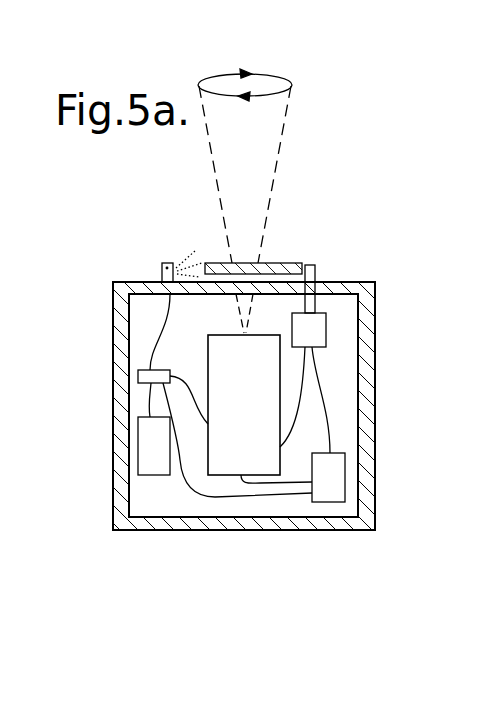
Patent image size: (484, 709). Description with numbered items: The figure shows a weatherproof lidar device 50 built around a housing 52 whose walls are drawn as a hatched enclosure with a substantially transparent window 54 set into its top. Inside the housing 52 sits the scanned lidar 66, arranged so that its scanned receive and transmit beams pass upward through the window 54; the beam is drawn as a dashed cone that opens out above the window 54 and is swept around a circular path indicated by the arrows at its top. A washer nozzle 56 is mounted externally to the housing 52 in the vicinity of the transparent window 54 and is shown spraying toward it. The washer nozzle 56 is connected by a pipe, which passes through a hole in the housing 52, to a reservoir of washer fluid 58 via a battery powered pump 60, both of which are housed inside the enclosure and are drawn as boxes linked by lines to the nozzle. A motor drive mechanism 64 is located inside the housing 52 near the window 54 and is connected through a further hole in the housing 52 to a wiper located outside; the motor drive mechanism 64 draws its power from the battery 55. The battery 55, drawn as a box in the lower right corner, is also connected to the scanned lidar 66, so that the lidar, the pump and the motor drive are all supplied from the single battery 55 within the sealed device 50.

The weatherproof lidar device 50 is at (120, 562).
The housing 52 is at (355, 283).
The transparent window 54 is at (215, 290).
The battery 55 is at (335, 470).
The washer nozzle 56 is at (156, 263).
The reservoir of washer fluid 58 is at (150, 447).
The battery powered pump 60 is at (288, 268).
The motor drive mechanism 64 is at (314, 328).
The scanned lidar 66 is at (229, 446).